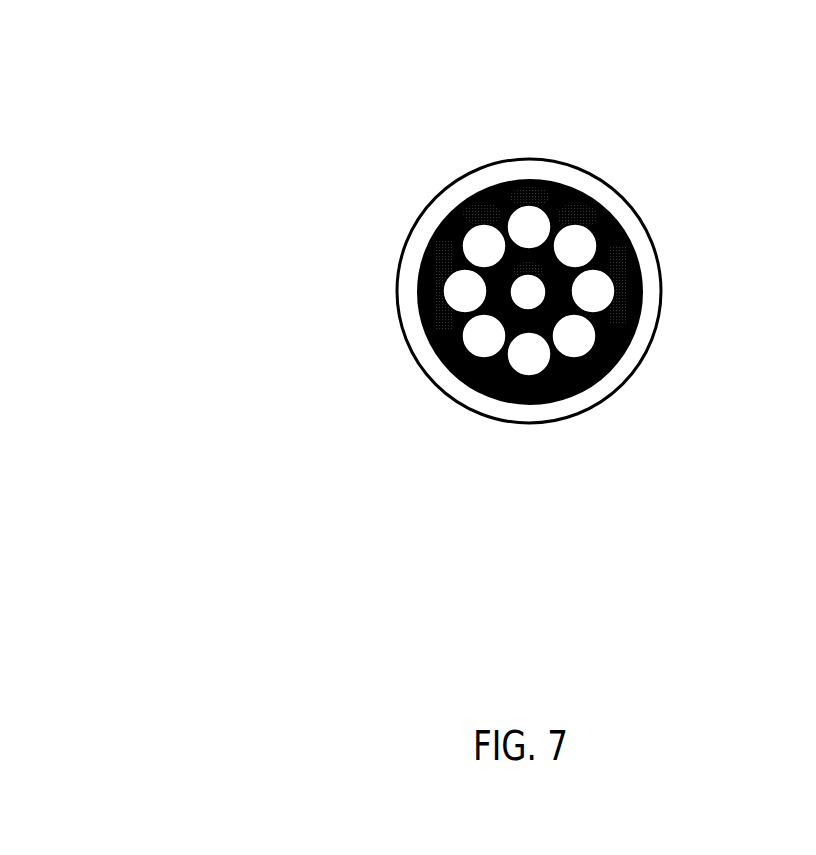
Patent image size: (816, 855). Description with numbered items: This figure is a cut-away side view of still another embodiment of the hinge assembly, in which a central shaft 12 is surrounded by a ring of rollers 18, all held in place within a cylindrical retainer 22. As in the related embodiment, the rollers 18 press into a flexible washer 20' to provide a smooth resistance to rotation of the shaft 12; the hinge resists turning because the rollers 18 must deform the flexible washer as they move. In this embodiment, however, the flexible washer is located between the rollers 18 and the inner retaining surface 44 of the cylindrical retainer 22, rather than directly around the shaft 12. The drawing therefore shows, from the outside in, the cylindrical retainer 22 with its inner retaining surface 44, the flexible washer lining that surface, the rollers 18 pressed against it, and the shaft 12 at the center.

The cylindrical retainer 22 is at (557, 229).
The rollers 18 is at (462, 292).
The inner retaining surface 44 is at (473, 203).
The flexible washer 20' is at (660, 176).
The shaft 12 is at (414, 229).